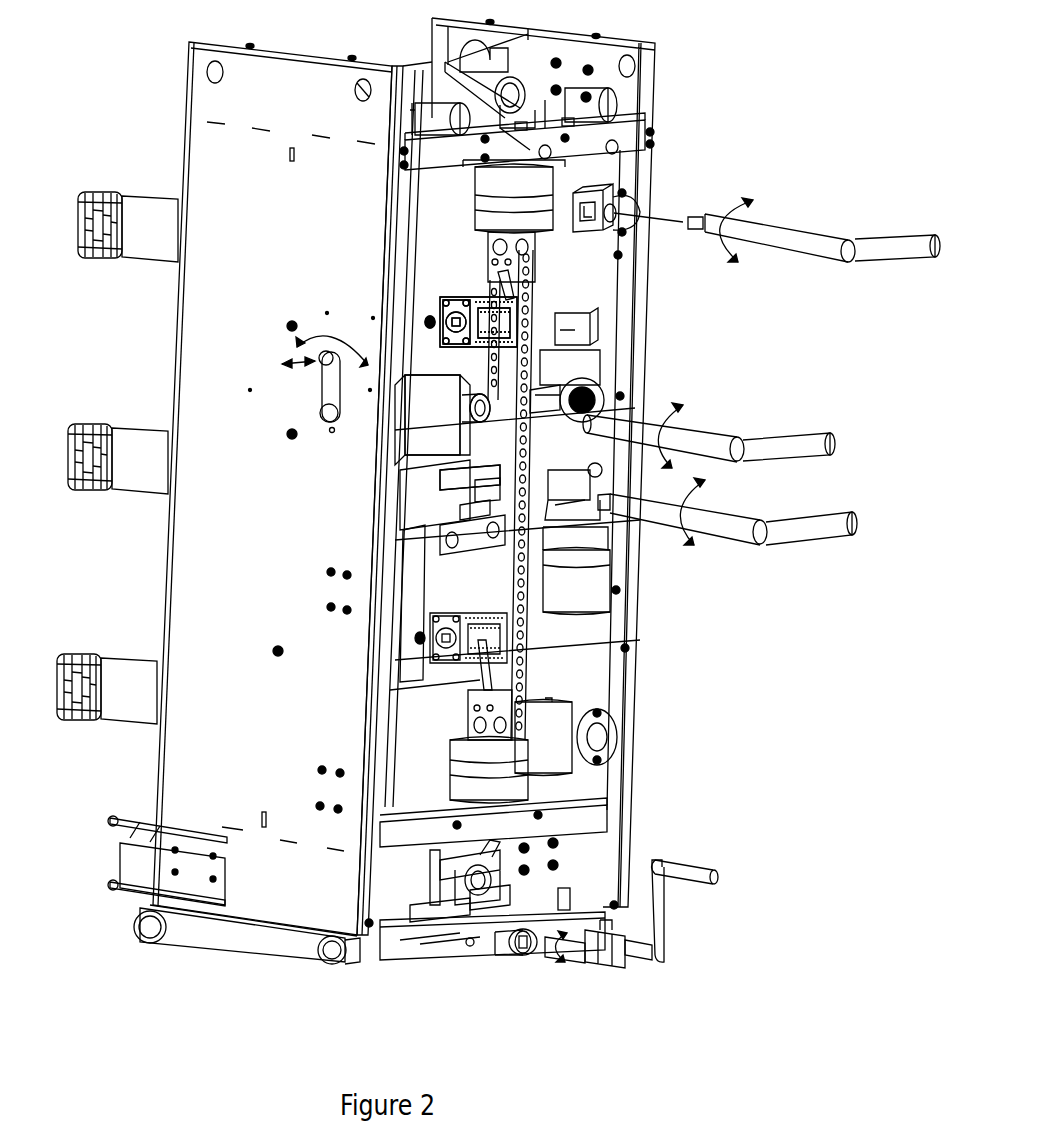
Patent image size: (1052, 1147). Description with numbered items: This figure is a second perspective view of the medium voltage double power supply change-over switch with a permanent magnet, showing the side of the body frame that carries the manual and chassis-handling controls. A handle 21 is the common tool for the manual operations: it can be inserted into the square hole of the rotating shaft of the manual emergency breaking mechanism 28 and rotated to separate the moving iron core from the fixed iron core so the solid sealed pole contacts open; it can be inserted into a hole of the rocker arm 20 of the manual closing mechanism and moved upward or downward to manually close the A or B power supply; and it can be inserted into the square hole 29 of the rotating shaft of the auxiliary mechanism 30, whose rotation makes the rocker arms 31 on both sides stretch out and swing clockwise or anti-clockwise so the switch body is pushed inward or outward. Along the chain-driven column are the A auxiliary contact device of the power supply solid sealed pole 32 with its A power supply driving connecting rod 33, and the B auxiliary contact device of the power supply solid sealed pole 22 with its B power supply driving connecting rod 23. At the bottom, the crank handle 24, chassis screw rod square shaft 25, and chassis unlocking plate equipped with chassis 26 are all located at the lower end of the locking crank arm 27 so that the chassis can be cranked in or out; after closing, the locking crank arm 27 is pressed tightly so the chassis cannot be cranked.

The rocker arm 20 is at (632, 197).
The handle 21 is at (810, 527).
The B auxiliary contact device of power supply solid sealed pole 22 is at (500, 645).
The B power supply driving connecting rod 23 is at (510, 688).
The crank handle 24 is at (632, 953).
The chassis screw rod square shaft 25 is at (540, 956).
The chassis unlocking plate equipped with chassis 26 is at (518, 956).
The locking crank arm 27 is at (441, 921).
The rotating shaft of manual emergency breaking mechanism 28 is at (468, 485).
The square hole 29 is at (458, 408).
The rotating shaft of auxiliary mechanism 30 is at (455, 410).
The rocker arm 31 is at (322, 385).
The A auxiliary contact device of power supply solid sealed pole 32 is at (460, 316).
The A power supply driving connecting rod 33 is at (495, 288).